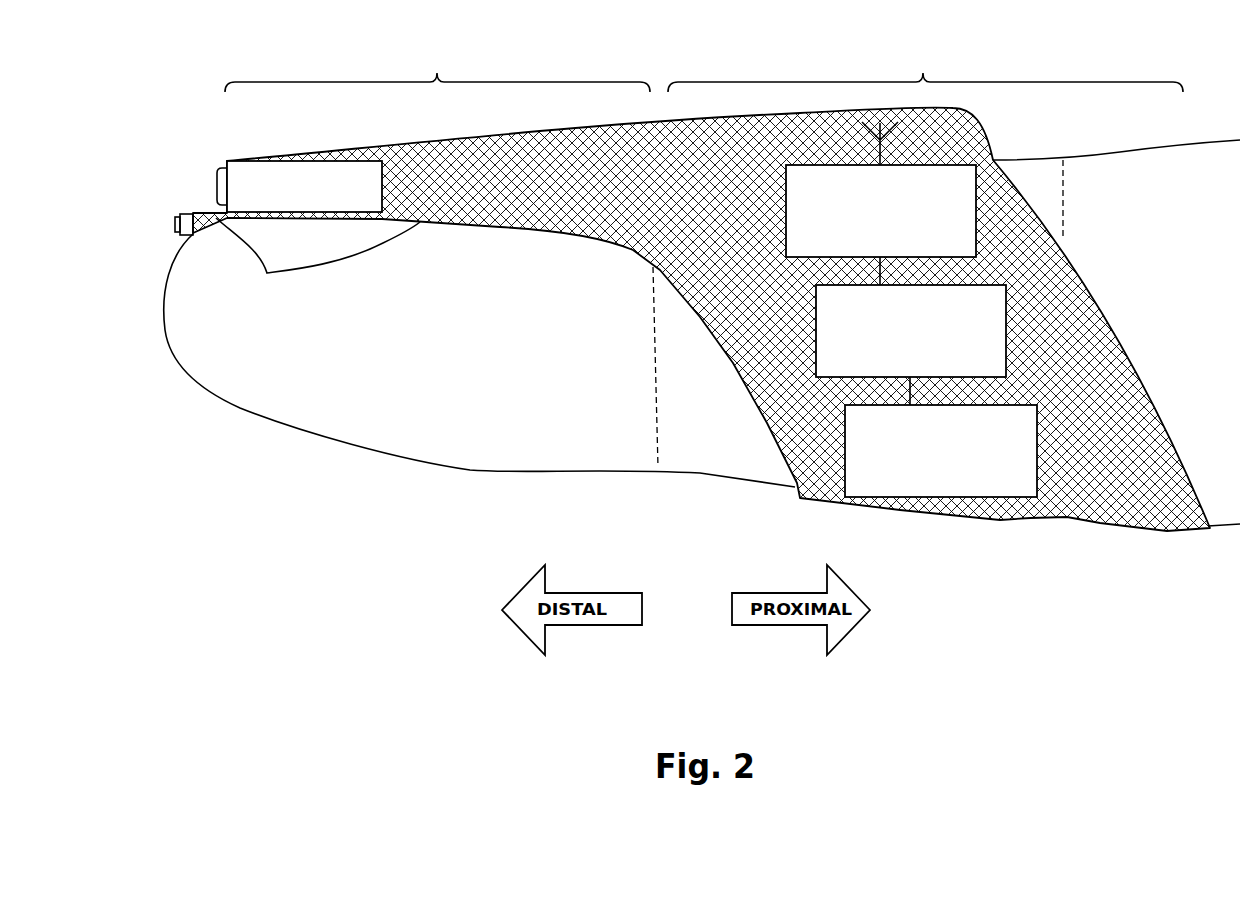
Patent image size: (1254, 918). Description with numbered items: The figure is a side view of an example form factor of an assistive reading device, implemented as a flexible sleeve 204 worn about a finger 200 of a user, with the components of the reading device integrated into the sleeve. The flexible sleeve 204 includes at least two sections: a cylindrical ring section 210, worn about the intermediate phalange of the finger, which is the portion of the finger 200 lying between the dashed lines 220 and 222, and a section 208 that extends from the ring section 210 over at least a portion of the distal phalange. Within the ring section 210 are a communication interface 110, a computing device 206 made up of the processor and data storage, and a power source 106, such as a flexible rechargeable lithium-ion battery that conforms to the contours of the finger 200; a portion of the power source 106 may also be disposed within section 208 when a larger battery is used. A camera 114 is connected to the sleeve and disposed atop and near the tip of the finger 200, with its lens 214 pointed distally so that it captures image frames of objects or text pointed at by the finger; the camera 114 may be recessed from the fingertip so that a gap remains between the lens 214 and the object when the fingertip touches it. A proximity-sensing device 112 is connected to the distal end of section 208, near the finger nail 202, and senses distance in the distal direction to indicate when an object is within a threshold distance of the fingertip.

The power source 106 is at (941, 451).
The communication interface 110 is at (881, 211).
The proximity-sensing device 112 is at (185, 203).
The camera 114 is at (304, 186).
The finger 200 is at (260, 415).
The finger nail 202 is at (330, 267).
The flexible sleeve 204 is at (1108, 318).
The computing device 206 is at (911, 331).
The section 208 is at (437, 69).
The section 210 is at (925, 69).
The lens 214 is at (217, 170).
The dashed line 220 is at (653, 413).
The dashed line 222 is at (1063, 207).